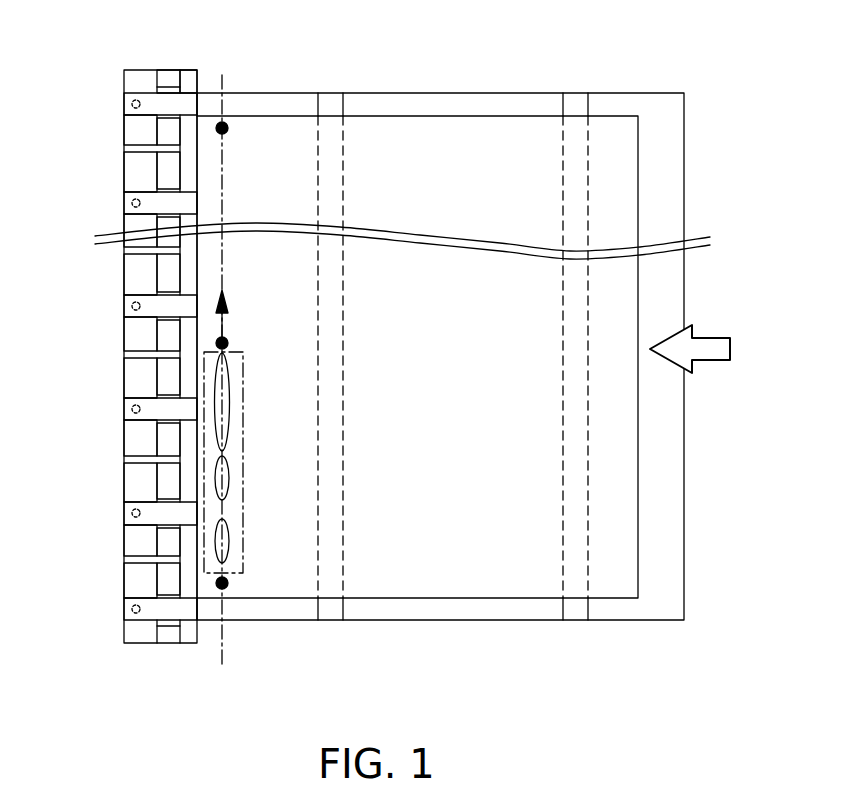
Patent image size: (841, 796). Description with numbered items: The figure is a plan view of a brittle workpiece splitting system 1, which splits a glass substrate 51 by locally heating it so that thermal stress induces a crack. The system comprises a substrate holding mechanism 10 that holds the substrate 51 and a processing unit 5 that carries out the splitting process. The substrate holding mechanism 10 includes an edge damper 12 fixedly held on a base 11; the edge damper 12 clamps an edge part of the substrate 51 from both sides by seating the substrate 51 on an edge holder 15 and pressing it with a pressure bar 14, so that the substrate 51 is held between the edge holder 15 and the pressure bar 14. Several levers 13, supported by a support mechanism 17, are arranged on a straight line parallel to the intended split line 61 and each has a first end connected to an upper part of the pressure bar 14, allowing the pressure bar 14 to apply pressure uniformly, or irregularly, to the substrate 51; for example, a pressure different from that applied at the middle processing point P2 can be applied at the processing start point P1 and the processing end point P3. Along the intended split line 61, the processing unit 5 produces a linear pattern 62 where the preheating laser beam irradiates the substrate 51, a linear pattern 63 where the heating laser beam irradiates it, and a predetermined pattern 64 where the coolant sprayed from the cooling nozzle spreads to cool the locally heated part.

The brittle workpiece splitting system 1 is at (320, 52).
The substrate holding mechanism 10 is at (360, 80).
The base 11 is at (673, 117).
The edge damper 12 is at (120, 76).
The lever 13 is at (152, 108).
The pressure bar 14 is at (184, 78).
The edge holder 15 is at (168, 75).
The support mechanism 17 is at (183, 84).
The substrate 51 is at (503, 140).
The processing unit 5 is at (243, 372).
The intended split line 61 is at (223, 637).
The linear pattern 62 is at (229, 402).
The linear pattern 63 is at (229, 478).
The predetermined pattern 64 is at (229, 541).
The processing start point P1 is at (228, 583).
The middle processing point P2 is at (228, 343).
The processing end point P3 is at (228, 130).